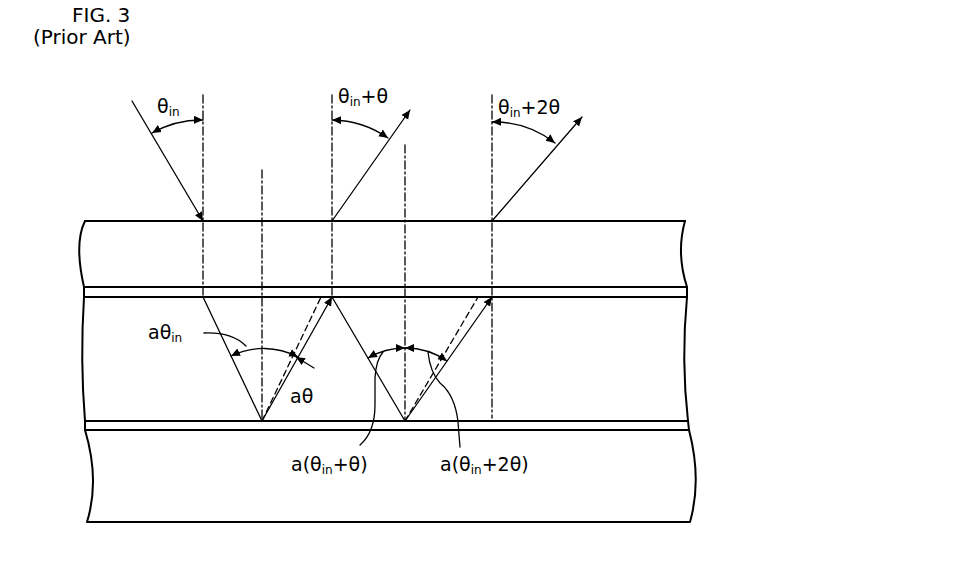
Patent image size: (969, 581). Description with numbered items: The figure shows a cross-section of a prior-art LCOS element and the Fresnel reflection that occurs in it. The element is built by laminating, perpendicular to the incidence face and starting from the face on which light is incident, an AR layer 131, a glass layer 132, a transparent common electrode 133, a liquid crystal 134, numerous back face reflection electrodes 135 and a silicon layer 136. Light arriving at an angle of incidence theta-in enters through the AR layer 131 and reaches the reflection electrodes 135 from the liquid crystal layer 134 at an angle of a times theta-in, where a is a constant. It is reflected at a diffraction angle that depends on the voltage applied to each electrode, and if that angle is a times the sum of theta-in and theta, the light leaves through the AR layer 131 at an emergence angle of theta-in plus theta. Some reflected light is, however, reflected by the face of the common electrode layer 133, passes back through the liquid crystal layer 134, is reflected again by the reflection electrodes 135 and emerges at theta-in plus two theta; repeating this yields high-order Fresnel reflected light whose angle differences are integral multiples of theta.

The AR layer 131 is at (621, 222).
The glass layer 132 is at (673, 252).
The transparent common electrode 133 is at (683, 293).
The liquid crystal 134 is at (673, 357).
The back face reflection electrodes 135 is at (677, 427).
The silicon layer 136 is at (682, 482).